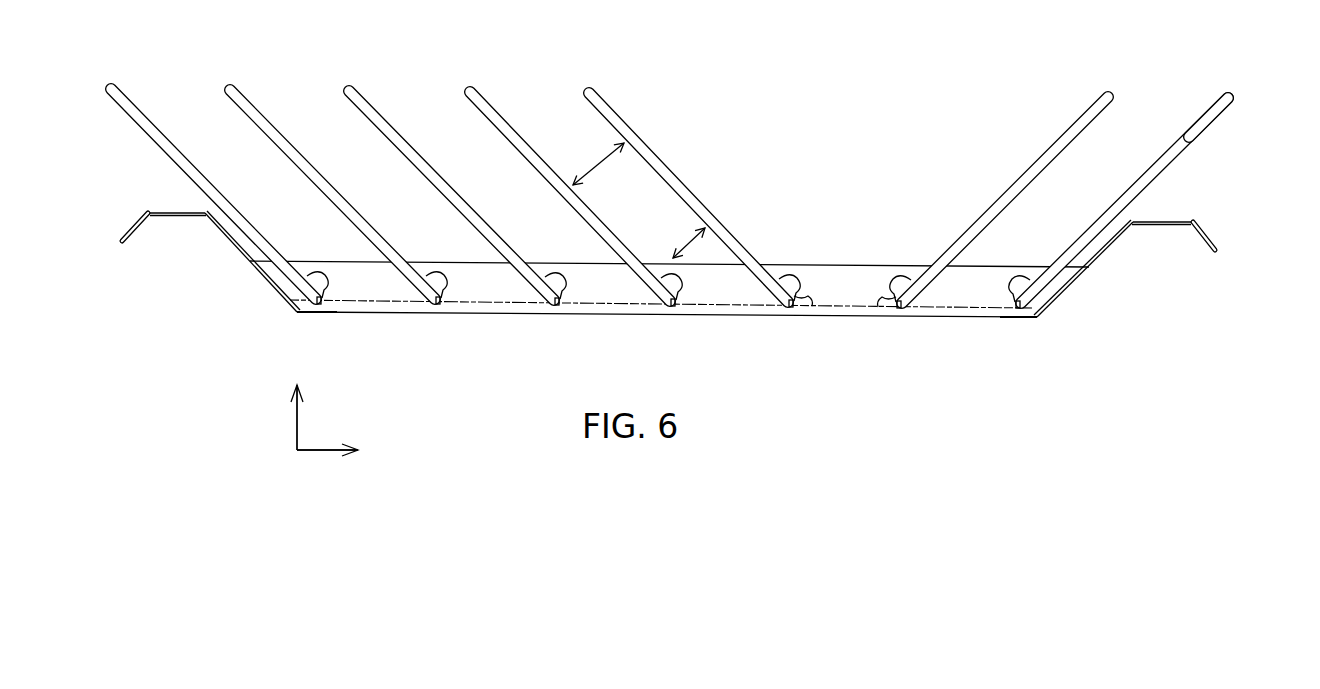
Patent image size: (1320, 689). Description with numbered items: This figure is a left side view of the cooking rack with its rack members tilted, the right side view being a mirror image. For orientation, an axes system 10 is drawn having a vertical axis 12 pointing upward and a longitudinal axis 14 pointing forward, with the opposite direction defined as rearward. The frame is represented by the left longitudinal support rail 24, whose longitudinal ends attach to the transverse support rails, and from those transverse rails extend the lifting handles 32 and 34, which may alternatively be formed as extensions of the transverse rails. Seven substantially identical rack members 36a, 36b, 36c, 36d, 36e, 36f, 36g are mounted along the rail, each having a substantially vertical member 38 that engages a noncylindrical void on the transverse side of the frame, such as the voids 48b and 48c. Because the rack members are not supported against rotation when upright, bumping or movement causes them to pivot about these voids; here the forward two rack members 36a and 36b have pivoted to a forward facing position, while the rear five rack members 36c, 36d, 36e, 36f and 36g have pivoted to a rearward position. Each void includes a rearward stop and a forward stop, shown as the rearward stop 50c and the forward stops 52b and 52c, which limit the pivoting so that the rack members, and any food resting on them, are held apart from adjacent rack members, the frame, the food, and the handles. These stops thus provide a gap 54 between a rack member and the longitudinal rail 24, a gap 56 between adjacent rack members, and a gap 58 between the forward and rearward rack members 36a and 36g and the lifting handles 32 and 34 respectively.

The axes system 10 is at (338, 431).
The vertical axis 12 is at (296, 424).
The longitudinal axis 14 is at (324, 453).
The left longitudinal support rail 24 is at (612, 288).
The lifting handle 32 is at (1170, 222).
The lifting handle 34 is at (148, 213).
The rack member 36a is at (1222, 115).
The rack member 36b is at (1068, 125).
The rack member 36c is at (634, 119).
The rack member 36d is at (496, 118).
The rack member 36e is at (377, 110).
The rack member 36f is at (260, 110).
The rack member 36g is at (140, 108).
The vertical member 38 is at (1190, 121).
The noncylindrical void 48b is at (903, 278).
The noncylindrical void 48c is at (796, 278).
The rearward stop 50c is at (786, 298).
The forward stop 52b is at (893, 297).
The forward stop 52c is at (800, 292).
The gap 54 is at (693, 243).
The gap 56 is at (622, 182).
The gap 58 is at (242, 240).